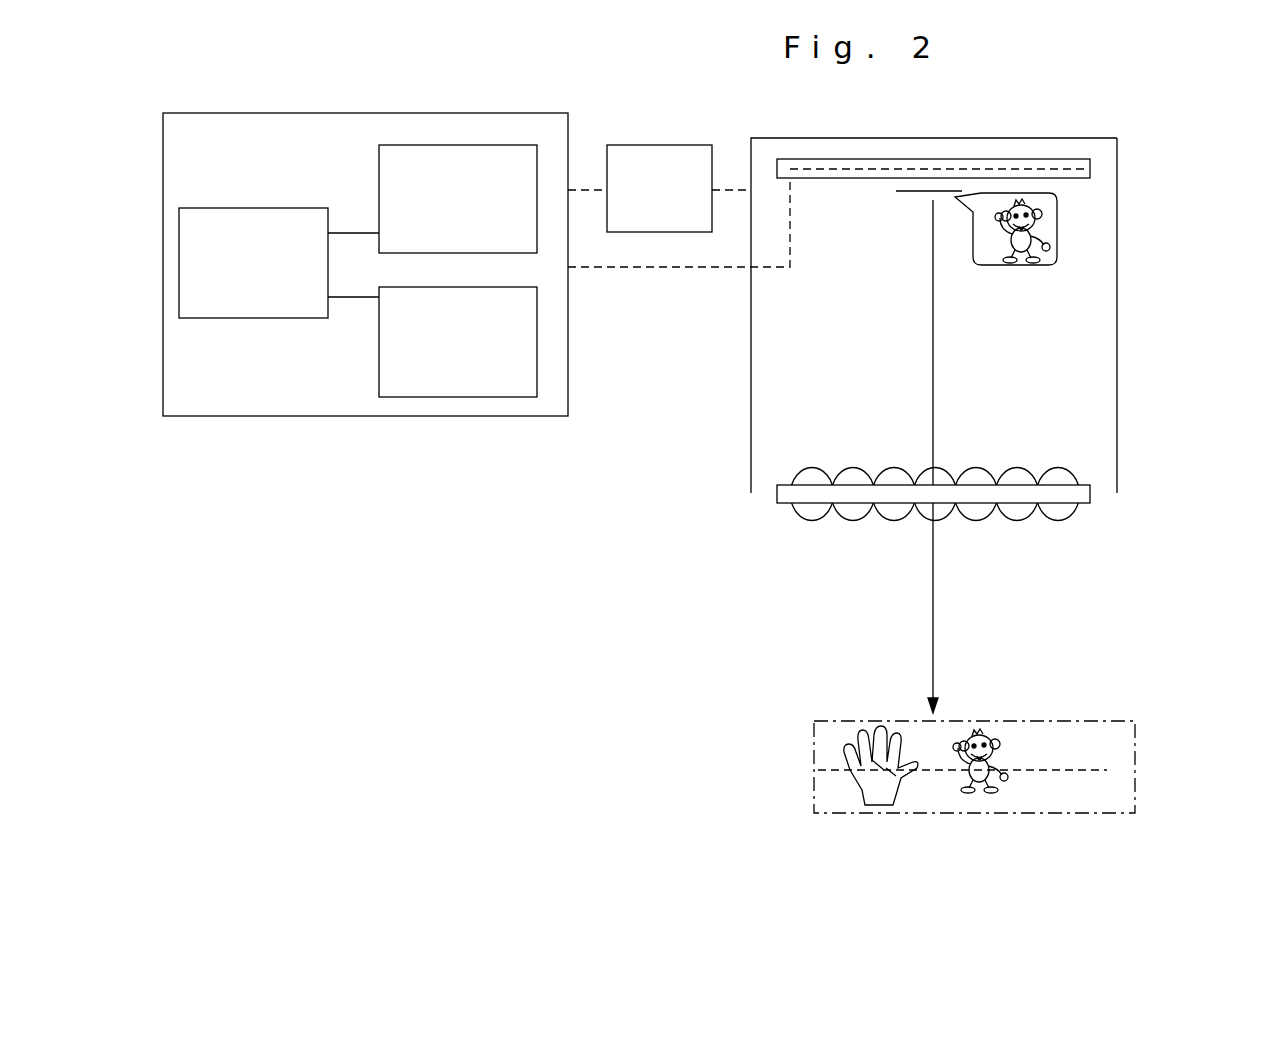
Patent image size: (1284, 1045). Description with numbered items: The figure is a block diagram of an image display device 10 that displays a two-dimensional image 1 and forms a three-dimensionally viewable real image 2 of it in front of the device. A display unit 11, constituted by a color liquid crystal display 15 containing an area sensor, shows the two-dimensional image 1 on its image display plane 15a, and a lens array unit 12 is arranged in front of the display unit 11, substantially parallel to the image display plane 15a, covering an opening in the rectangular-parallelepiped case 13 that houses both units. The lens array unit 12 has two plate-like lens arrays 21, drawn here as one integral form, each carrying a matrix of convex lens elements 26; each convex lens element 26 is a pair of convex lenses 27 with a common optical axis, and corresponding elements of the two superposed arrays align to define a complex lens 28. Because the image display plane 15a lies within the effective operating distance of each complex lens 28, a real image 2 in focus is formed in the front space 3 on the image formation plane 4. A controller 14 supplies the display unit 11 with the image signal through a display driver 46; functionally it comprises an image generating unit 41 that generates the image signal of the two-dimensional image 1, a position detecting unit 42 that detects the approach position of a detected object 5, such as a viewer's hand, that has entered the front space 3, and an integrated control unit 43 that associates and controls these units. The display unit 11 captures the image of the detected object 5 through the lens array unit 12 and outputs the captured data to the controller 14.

The two-dimensional image 1 is at (903, 193).
The real image 2 is at (973, 780).
The front space 3 is at (1135, 740).
The image formation plane 4 is at (1107, 770).
The detected object 5 is at (877, 788).
The image display device 10 is at (1013, 290).
The display unit 11 is at (983, 145).
The lens array unit 12 is at (1030, 583).
The case 13 is at (1118, 402).
The controller 14 is at (365, 315).
The display 15 is at (933, 145).
The image display plane 15a is at (876, 180).
The plate-like lens array 21 is at (1109, 497).
The convex lens element 26 is at (1017, 541).
The convex lens 27 is at (816, 476).
The complex lens 28 is at (1030, 629).
The image generating unit 41 is at (468, 145).
The position detecting unit 42 is at (468, 287).
The integrated control unit 43 is at (297, 320).
The display driver 46 is at (619, 145).